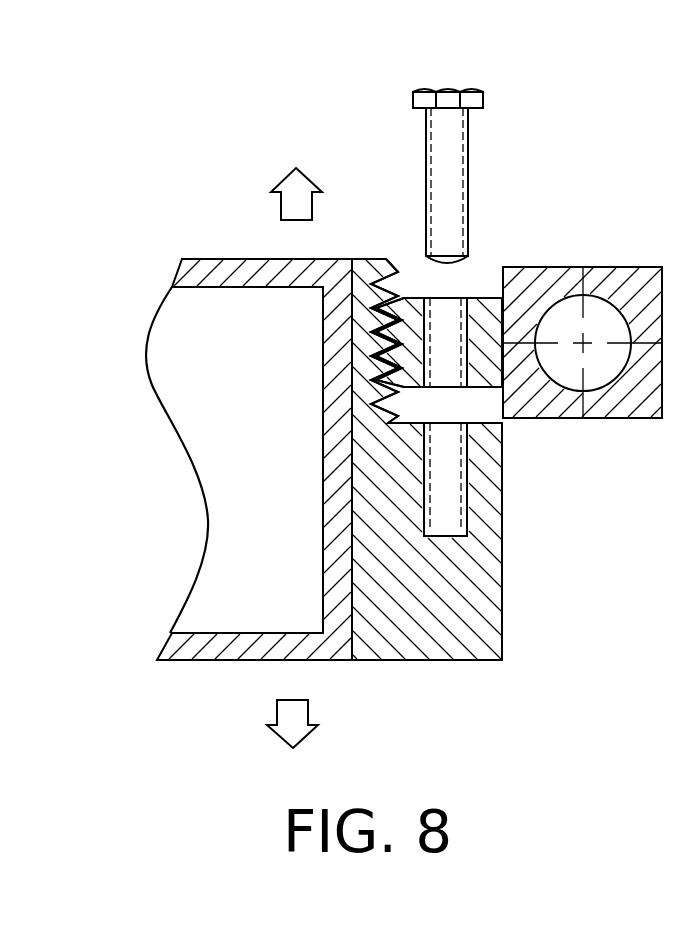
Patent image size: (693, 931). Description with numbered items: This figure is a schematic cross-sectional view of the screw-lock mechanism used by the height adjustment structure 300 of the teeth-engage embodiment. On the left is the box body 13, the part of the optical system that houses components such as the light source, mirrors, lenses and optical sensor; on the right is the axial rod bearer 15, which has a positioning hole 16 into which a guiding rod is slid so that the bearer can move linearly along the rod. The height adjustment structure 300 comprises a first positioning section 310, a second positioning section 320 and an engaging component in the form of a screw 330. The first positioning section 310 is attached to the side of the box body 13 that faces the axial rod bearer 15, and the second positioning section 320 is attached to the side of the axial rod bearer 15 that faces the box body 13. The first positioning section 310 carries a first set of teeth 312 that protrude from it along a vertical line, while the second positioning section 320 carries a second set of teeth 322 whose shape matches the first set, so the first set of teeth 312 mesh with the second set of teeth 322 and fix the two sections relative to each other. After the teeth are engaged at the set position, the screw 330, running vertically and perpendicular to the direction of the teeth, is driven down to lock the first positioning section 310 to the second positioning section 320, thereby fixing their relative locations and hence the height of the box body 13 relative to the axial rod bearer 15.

The box body 13 is at (227, 260).
The axial rod bearer 15 is at (545, 272).
The positioning hole 16 is at (612, 316).
The height adjustment structure 300 is at (522, 410).
The first positioning section 310 is at (468, 570).
The first set of teeth 312 is at (393, 272).
The second positioning section 320 is at (507, 393).
The second set of teeth 322 is at (400, 300).
The screw 330 is at (470, 98).